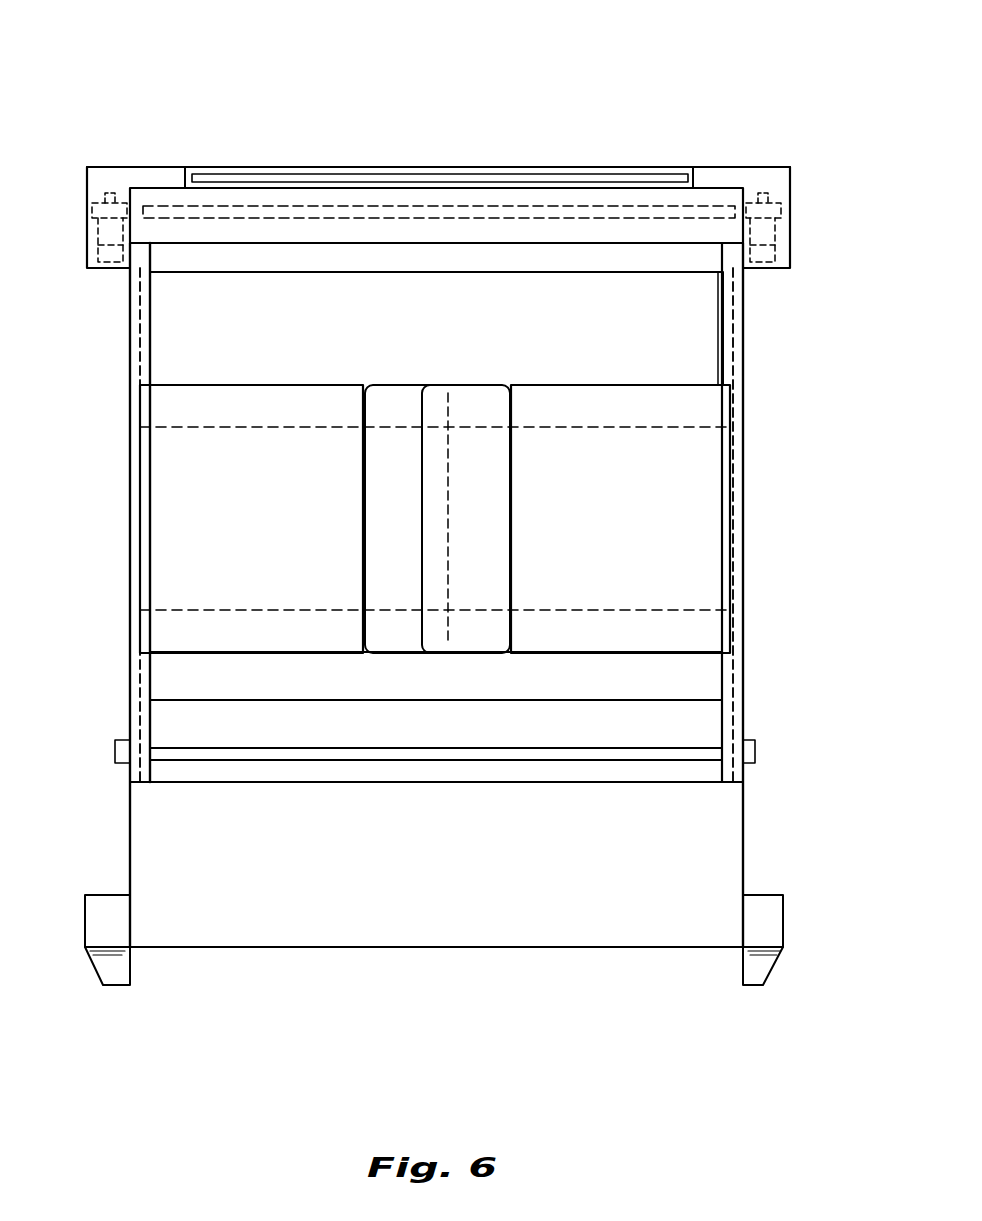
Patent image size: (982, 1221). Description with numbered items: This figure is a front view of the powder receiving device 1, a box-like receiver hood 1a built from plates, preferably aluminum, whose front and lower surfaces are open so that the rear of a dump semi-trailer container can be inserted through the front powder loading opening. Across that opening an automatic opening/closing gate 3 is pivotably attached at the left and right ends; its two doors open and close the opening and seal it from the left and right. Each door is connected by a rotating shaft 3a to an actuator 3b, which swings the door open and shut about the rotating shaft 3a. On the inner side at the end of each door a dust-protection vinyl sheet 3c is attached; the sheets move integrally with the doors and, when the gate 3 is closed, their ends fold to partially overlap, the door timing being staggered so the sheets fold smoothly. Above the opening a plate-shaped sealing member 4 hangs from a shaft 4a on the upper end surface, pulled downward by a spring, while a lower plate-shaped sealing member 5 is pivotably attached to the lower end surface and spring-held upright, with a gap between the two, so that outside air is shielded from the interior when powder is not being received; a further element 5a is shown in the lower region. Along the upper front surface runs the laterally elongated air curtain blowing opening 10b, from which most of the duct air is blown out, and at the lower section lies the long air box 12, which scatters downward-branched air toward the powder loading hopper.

The powder receiving device 1 is at (716, 55).
The receiver hood 1a is at (745, 480).
The automatic opening/closing gate 3 is at (155, 510).
The rotating shaft 3a is at (146, 352).
The actuator 3b is at (92, 216).
The dust-protection vinyl sheet 3c is at (392, 395).
The sealing member 4 is at (697, 360).
The shaft 4a is at (548, 218).
The sealing member 5 is at (165, 684).
The lower support rail 5a is at (551, 752).
The air curtain blowing opening 10b is at (371, 180).
The air box 12 is at (100, 908).